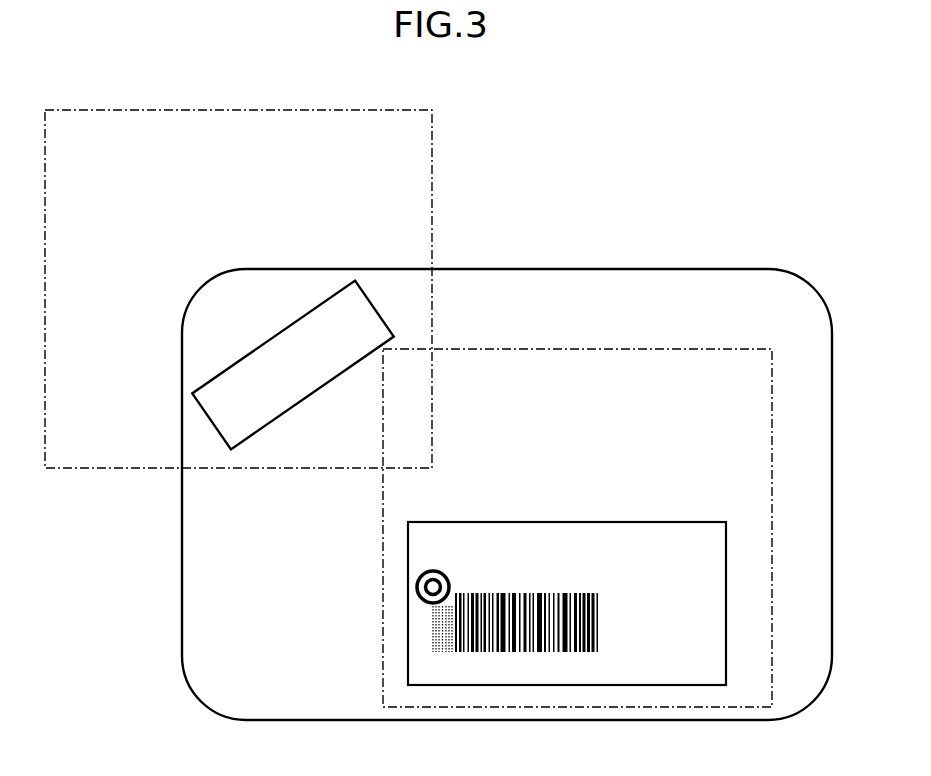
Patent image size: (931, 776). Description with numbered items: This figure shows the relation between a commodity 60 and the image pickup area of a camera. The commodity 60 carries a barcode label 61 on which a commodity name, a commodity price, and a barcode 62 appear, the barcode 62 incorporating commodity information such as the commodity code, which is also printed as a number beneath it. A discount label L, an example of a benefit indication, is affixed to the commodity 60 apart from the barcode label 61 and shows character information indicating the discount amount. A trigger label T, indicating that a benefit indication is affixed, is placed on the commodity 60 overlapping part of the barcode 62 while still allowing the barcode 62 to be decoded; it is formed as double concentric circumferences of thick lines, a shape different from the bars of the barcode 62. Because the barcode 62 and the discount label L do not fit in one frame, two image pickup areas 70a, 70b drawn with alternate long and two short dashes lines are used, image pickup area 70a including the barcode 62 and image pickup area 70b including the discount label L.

The commodity 60 is at (757, 269).
The barcode label 61 is at (659, 521).
The barcode 62 is at (432, 617).
The image pickup area 70a is at (383, 670).
The image pickup area 70b is at (123, 469).
The discount label L is at (313, 395).
The trigger label T is at (417, 587).